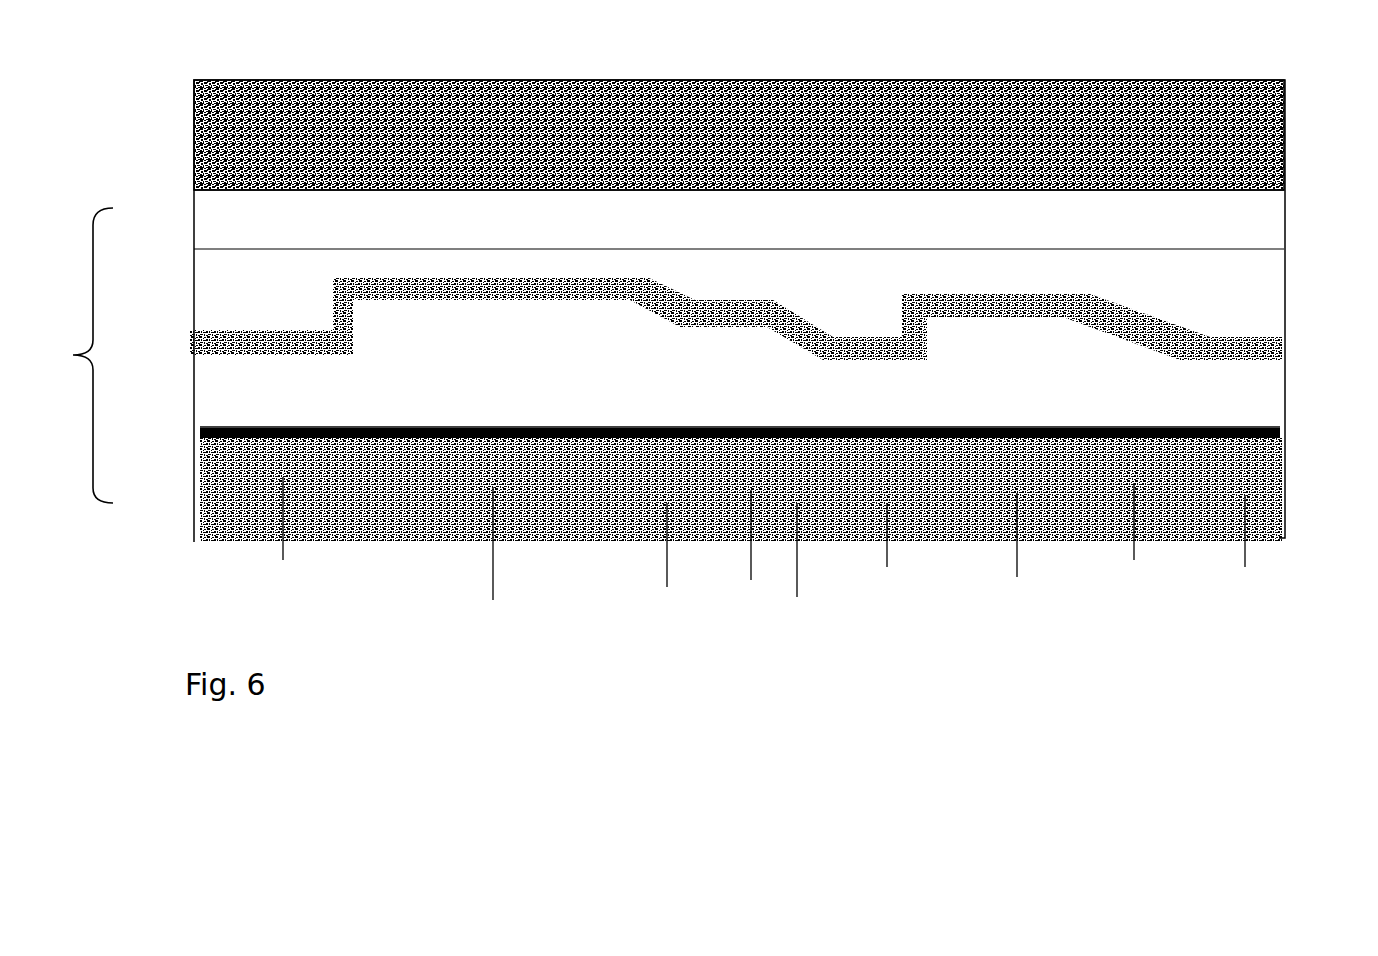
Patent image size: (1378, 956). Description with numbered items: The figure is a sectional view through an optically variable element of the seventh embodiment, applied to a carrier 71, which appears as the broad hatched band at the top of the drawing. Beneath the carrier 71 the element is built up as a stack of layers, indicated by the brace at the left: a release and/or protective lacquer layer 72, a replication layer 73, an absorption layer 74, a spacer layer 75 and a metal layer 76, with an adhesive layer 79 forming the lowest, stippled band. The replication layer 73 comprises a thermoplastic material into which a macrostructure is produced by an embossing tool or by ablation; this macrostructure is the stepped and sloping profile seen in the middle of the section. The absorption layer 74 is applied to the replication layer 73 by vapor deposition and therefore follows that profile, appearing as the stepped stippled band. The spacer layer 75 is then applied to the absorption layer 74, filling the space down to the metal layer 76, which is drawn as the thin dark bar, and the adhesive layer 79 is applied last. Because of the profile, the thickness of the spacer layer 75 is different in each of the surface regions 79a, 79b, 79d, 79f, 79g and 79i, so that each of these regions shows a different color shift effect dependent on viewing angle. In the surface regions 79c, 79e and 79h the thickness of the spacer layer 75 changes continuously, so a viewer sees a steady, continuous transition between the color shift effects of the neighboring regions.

The carrier 71 is at (1257, 150).
The release and/or protective lacquer layer 72 is at (230, 235).
The replication layer 73 is at (1185, 288).
The absorption layer 74 is at (230, 347).
The spacer layer 75 is at (258, 389).
The metal layer 76 is at (200, 441).
The adhesive layer 79 is at (1198, 450).
The surface region 79a is at (276, 535).
The surface region 79b is at (498, 560).
The surface region 79c is at (662, 563).
The surface region 79d is at (745, 550).
The surface region 79e is at (799, 572).
The surface region 79f is at (891, 561).
The surface region 79g is at (1020, 551).
The surface region 79h is at (1138, 542).
The surface region 79i is at (1244, 552).